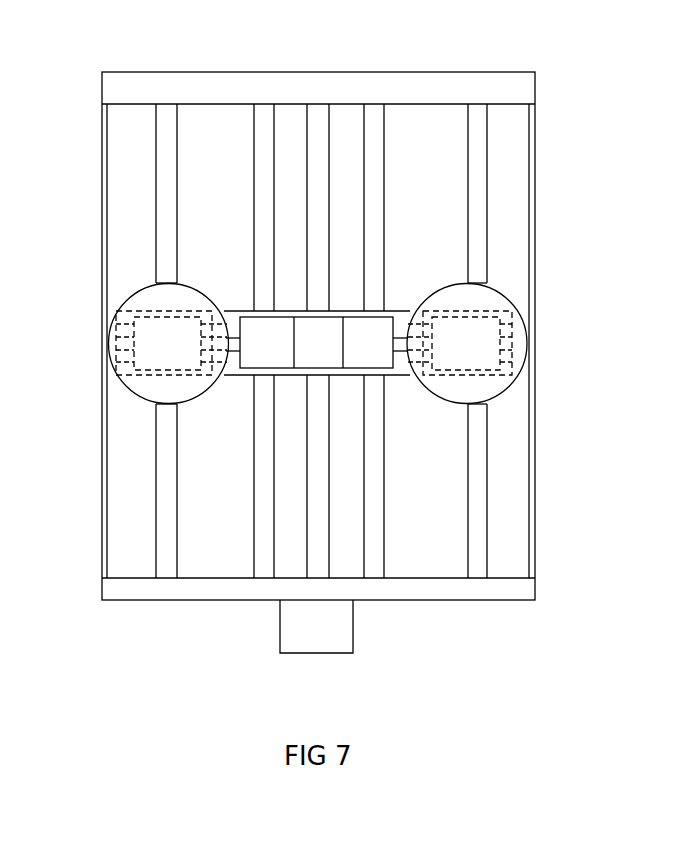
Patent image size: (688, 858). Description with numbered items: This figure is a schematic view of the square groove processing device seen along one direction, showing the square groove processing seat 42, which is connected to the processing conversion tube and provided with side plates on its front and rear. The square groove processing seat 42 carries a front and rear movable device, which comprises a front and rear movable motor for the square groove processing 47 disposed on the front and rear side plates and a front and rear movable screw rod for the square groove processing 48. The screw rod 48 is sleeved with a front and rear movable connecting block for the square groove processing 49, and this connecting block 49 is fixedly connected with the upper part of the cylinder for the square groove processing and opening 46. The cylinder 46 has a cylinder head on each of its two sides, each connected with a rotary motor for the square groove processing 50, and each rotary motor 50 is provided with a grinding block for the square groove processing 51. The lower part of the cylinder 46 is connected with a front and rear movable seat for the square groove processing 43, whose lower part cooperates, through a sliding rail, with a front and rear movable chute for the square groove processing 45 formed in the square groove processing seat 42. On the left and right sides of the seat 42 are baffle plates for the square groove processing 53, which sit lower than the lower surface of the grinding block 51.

The square groove processing seat 42 is at (197, 140).
The front and rear movable seat for the square groove processing 43 is at (238, 313).
The front and rear movable chute for the square groove processing 45 is at (475, 125).
The cylinder for the square groove processing and opening 46 is at (358, 345).
The front and rear movable motor for the square groove processing 47 is at (291, 620).
The front and rear movable screw rod for the square groove processing 48 is at (317, 130).
The front and rear movable connecting block for the square groove processing 49 is at (310, 345).
The rotary motor for the square groove processing 50 is at (175, 343).
The grinding block for the square groove processing 51 is at (470, 392).
The baffle plate for the square groove processing 53 is at (535, 240).